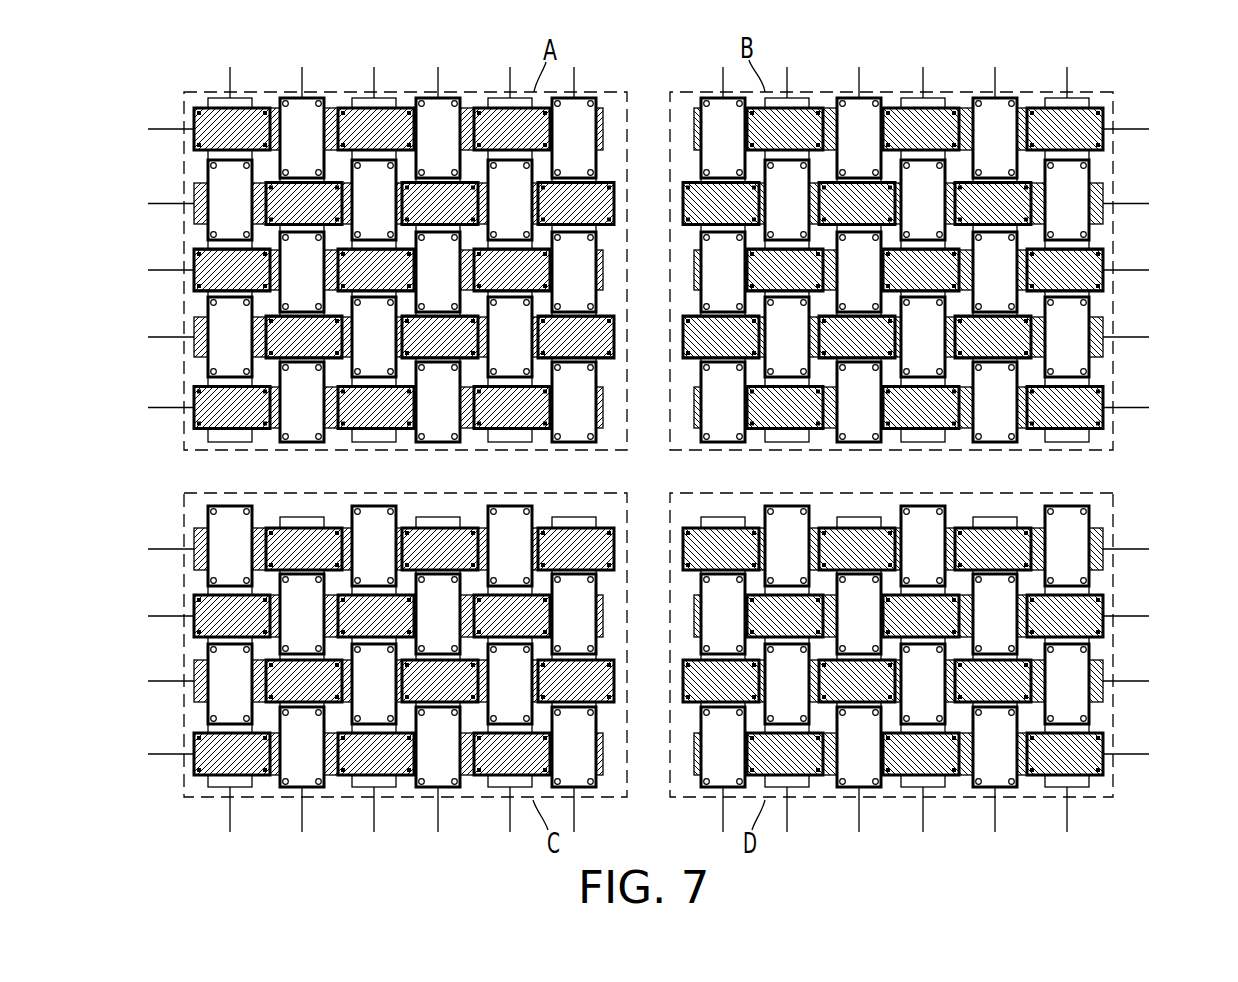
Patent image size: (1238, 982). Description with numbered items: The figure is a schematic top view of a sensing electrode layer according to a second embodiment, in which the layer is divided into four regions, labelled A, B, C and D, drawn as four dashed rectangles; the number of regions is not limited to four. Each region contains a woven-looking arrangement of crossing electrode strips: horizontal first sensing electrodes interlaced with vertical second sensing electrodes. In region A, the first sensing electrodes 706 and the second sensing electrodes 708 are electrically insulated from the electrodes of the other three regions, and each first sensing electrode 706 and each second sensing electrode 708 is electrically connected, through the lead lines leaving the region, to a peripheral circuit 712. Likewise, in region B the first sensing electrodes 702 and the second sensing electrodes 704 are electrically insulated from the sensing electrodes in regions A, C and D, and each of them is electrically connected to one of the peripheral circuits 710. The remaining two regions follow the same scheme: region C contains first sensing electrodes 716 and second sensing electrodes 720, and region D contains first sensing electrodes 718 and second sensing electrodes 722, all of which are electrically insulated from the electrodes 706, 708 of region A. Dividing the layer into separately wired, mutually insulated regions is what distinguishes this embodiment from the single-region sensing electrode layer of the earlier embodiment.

The first sensing electrodes 702 is at (1117, 122).
The second sensing electrodes 704 is at (850, 93).
The first sensing electrodes 706 is at (192, 113).
The second sensing electrodes 708 is at (450, 95).
The peripheral circuits 710 is at (1150, 128).
The peripheral circuit 712 is at (145, 130).
The first sensing electrodes 716 is at (185, 758).
The first sensing electrodes 718 is at (1112, 758).
The second sensing electrodes 720 is at (447, 797).
The second sensing electrodes 722 is at (853, 798).